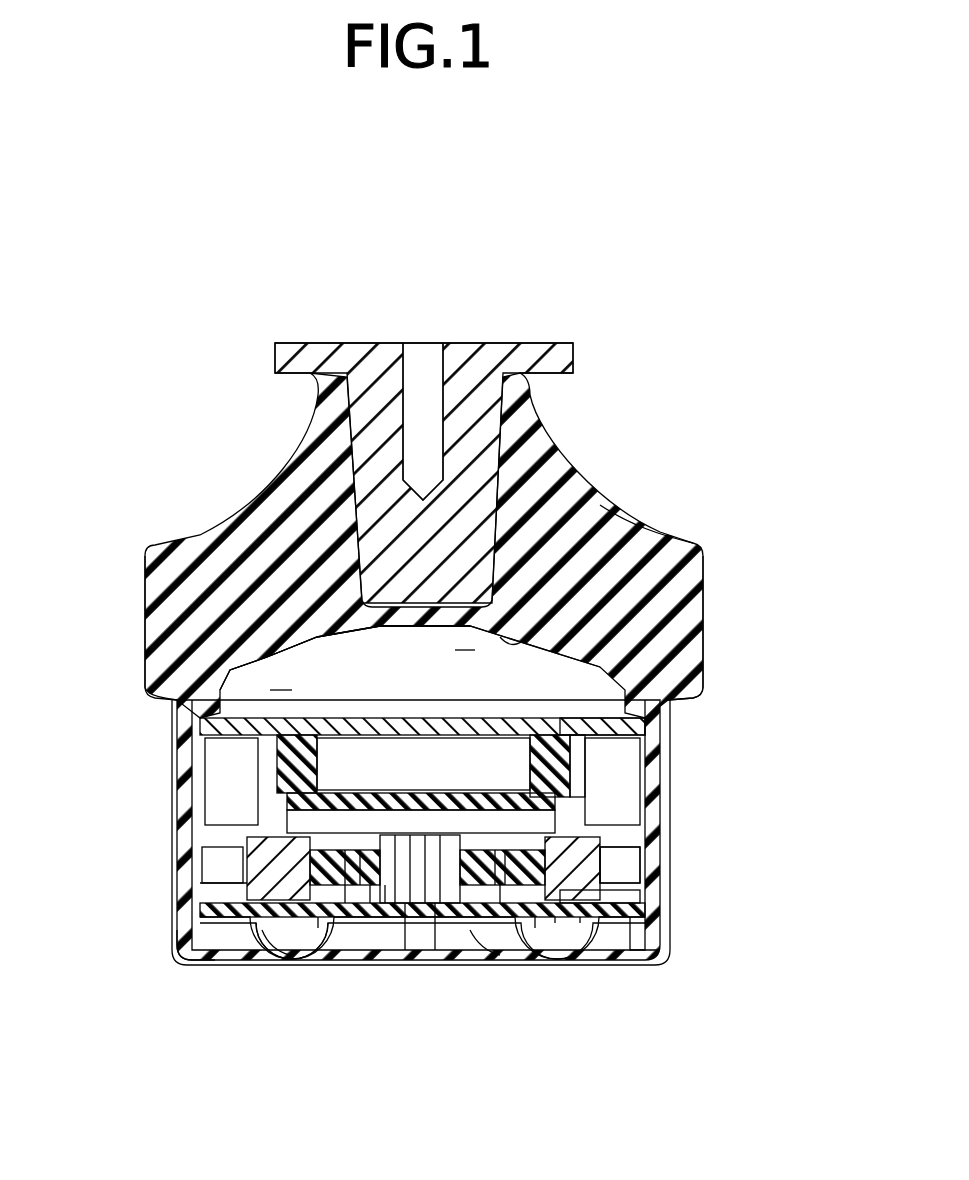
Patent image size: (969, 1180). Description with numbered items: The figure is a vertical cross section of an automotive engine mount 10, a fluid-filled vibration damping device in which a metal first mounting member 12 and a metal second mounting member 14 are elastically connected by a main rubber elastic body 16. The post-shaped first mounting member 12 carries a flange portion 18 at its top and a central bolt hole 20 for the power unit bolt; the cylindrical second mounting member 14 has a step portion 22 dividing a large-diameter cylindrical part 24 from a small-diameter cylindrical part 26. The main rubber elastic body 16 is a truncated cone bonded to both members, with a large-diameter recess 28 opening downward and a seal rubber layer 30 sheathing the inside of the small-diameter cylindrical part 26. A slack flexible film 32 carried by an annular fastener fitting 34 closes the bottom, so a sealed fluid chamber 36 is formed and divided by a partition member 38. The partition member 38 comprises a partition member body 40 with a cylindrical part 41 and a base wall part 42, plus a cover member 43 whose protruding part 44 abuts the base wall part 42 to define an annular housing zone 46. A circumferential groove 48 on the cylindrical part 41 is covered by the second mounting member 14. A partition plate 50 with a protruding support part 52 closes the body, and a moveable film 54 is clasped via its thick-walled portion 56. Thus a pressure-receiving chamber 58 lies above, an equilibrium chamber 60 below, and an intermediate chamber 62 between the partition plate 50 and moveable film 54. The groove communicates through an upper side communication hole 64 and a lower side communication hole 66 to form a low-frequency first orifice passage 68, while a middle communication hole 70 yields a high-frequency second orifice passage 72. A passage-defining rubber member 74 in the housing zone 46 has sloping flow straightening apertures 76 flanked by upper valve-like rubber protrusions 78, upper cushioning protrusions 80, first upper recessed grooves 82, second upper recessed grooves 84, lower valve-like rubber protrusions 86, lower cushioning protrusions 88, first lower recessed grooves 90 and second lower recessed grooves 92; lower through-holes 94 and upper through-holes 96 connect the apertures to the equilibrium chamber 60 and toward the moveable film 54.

The engine mount 10 is at (665, 405).
The first mounting member 12 is at (490, 335).
The second mounting member 14 is at (138, 666).
The main rubber elastic body 16 is at (568, 506).
The flange portion 18 is at (292, 362).
The bolt hole 20 is at (420, 372).
The step portion 22 is at (150, 712).
The large-diameter cylindrical part 24 is at (148, 628).
The small-diameter cylindrical part 26 is at (672, 722).
The large-diameter recess 28 is at (628, 560).
The seal rubber layer 30 is at (185, 945).
The flexible film 32 is at (605, 935).
The fastener fitting 34 is at (642, 917).
The fluid chamber 36 is at (350, 650).
The partition member 38 is at (290, 695).
The partition member body 40 is at (690, 625).
The cylindrical part 41 is at (688, 665).
The base wall part 42 is at (393, 900).
The cover member 43 is at (637, 837).
The protruding part 44 is at (418, 905).
The housing zone 46 is at (435, 905).
The circumferential groove 48 is at (637, 808).
The partition plate 50 is at (360, 735).
The protruding support part 52 is at (215, 772).
The moveable film 54 is at (455, 735).
The thick-walled portion 56 is at (643, 785).
The pressure-receiving chamber 58 is at (418, 677).
The equilibrium chamber 60 is at (292, 939).
The intermediate chamber 62 is at (406, 777).
The upper side communication hole 64 is at (200, 740).
The lower side communication hole 66 is at (200, 890).
The first orifice passage 68 is at (232, 820).
The middle communication hole 70 is at (655, 745).
The second orifice passage 72 is at (568, 735).
The passage-defining rubber member 74 is at (637, 895).
The flow straightening apertures 76 is at (345, 900).
The upper valve-like rubber protrusions 78 is at (360, 860).
The upper cushioning protrusions 80 is at (345, 850).
The first upper recessed grooves 82 is at (640, 862).
The second upper recessed grooves 84 is at (220, 860).
The lower valve-like rubber protrusions 86 is at (270, 930).
The lower cushioning protrusions 88 is at (370, 905).
The first lower recessed grooves 90 is at (200, 912).
The second lower recessed grooves 92 is at (385, 905).
The lower through-holes 94 is at (318, 930).
The upper through-holes 96 is at (290, 808).